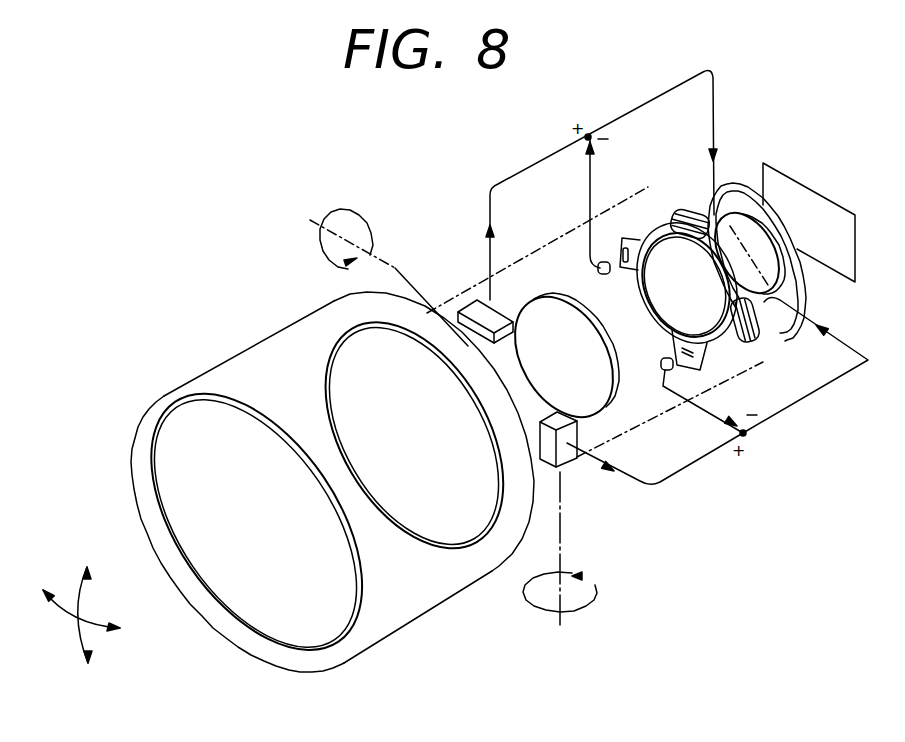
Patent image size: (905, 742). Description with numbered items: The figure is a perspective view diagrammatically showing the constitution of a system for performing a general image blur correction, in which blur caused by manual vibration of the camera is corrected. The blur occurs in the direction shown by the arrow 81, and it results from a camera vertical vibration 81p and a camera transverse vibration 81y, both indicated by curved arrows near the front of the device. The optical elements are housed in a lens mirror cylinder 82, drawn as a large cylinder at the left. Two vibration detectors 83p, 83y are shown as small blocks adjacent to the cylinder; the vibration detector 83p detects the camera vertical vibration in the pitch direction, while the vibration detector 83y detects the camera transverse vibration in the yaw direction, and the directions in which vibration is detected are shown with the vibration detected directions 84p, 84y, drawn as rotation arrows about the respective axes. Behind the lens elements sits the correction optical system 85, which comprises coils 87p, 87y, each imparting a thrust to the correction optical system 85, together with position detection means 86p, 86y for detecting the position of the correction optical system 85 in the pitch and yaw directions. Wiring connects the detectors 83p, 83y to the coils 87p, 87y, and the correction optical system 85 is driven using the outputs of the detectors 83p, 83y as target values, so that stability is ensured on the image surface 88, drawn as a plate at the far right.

The arrow 81 is at (72, 618).
The camera vertical vibration 81p is at (86, 670).
The camera transverse vibration 81y is at (110, 636).
The lens mirror cylinder 82 is at (421, 616).
The vibration detector 83p is at (473, 295).
The vibration detector 83y is at (570, 447).
The vibration detected direction 84p is at (322, 210).
The vibration detected direction 84y is at (573, 627).
The correction optical system 85 is at (650, 218).
The position detection means 86p is at (598, 270).
The position detection means 86y is at (676, 369).
The coil 87p is at (692, 207).
The coil 87y is at (762, 338).
The image surface 88 is at (827, 196).